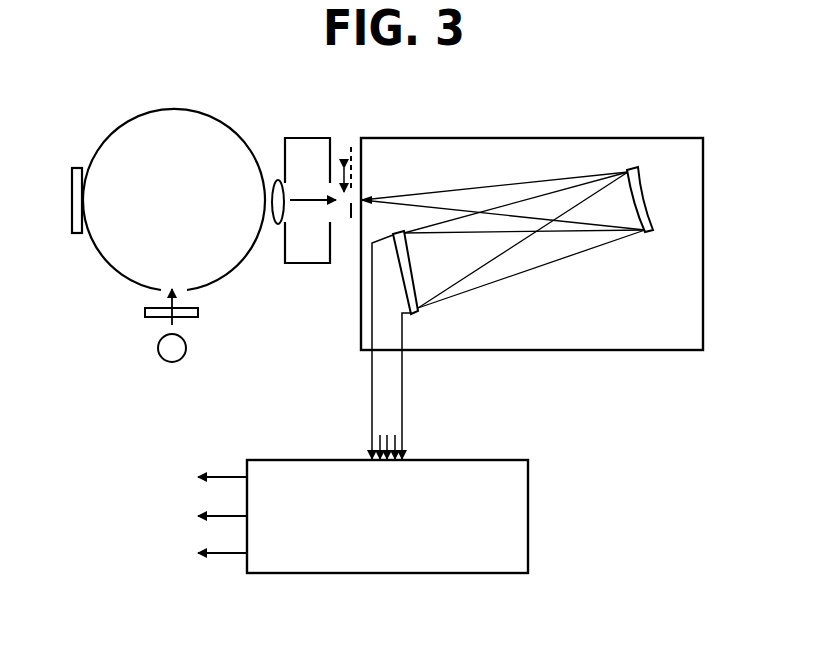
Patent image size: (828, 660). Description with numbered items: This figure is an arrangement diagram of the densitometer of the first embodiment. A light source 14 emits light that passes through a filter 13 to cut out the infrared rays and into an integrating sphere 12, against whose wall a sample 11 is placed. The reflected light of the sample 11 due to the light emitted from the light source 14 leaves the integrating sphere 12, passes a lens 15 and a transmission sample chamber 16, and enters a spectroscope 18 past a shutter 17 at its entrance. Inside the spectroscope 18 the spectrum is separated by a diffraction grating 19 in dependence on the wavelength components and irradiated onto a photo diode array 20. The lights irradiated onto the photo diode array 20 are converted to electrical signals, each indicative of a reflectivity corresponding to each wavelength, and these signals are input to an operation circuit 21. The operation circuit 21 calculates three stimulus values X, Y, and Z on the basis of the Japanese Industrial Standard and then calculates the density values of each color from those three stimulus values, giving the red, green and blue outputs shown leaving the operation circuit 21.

The sample 11 is at (80, 167).
The integrating sphere 12 is at (205, 113).
The filter to cut out the infrared rays 13 is at (200, 313).
The light source 14 is at (184, 352).
The lens 15 is at (278, 226).
The transmission sample chamber 16 is at (307, 138).
The shutter 17 is at (351, 220).
The spectroscope 18 is at (575, 138).
The diffraction grating 19 is at (647, 236).
The photo diode array 20 is at (416, 316).
The operation circuit 21 is at (528, 514).